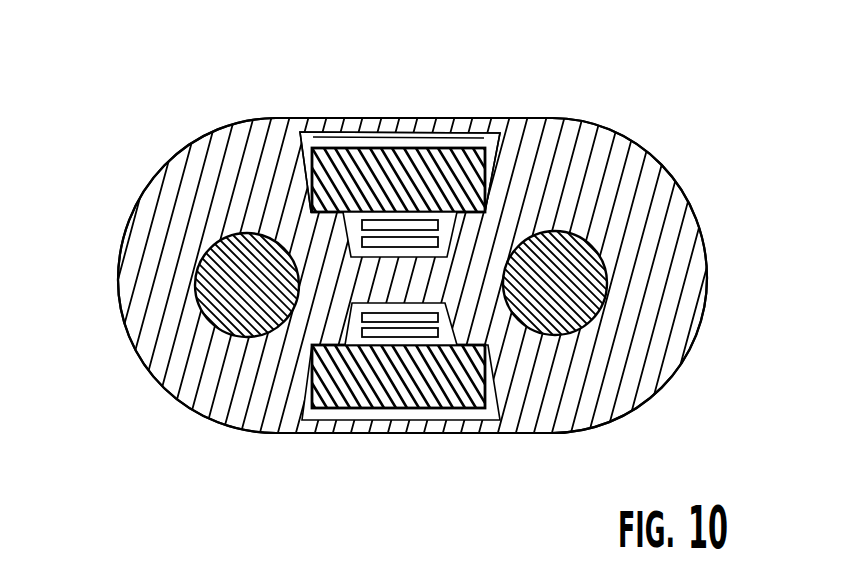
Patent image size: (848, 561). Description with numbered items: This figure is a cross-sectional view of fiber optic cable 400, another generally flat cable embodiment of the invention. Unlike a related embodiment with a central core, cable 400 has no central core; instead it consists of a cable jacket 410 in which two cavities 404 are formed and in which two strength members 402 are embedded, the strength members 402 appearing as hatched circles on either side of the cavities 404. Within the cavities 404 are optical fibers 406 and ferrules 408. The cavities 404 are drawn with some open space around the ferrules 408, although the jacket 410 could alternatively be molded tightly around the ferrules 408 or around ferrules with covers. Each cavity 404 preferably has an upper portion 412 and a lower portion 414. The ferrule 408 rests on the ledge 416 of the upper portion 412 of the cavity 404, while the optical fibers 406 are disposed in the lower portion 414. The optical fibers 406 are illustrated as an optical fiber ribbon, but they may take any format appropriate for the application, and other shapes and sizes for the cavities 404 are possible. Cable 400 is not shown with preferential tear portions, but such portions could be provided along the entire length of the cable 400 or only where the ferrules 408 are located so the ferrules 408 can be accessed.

The fiber optic cable 400 is at (697, 101).
The strength members 402 is at (217, 308).
The cavities 404 is at (450, 140).
The optical fibers 406 is at (452, 238).
The ferrules 408 is at (440, 160).
The cable jacket 410 is at (665, 342).
The upper portion 412 is at (360, 136).
The lower portion 414 is at (345, 241).
The ledge 416 is at (300, 132).